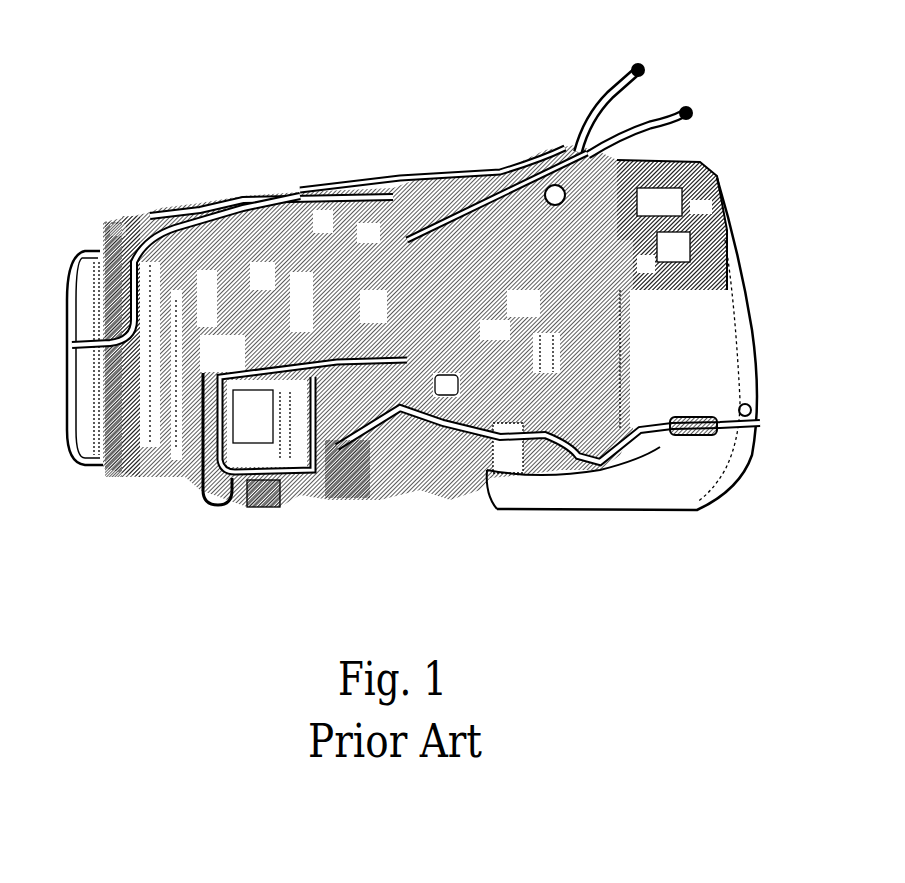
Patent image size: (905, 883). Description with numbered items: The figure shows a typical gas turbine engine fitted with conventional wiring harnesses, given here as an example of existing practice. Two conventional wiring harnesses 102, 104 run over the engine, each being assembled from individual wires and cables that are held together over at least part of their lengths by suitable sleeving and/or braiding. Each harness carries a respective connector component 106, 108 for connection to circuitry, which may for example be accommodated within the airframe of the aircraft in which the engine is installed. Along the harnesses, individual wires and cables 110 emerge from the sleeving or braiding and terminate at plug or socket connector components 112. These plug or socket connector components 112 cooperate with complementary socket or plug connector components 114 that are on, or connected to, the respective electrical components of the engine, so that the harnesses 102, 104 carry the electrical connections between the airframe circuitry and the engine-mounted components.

The wiring harness 102 is at (480, 176).
The wiring harness 104 is at (723, 225).
The connector component 106 is at (684, 121).
The connector component 108 is at (632, 70).
The individual wires and cables 110 is at (313, 200).
The plug or socket connector component 112 is at (282, 455).
The complementary socket or plug connector component 114 is at (357, 496).